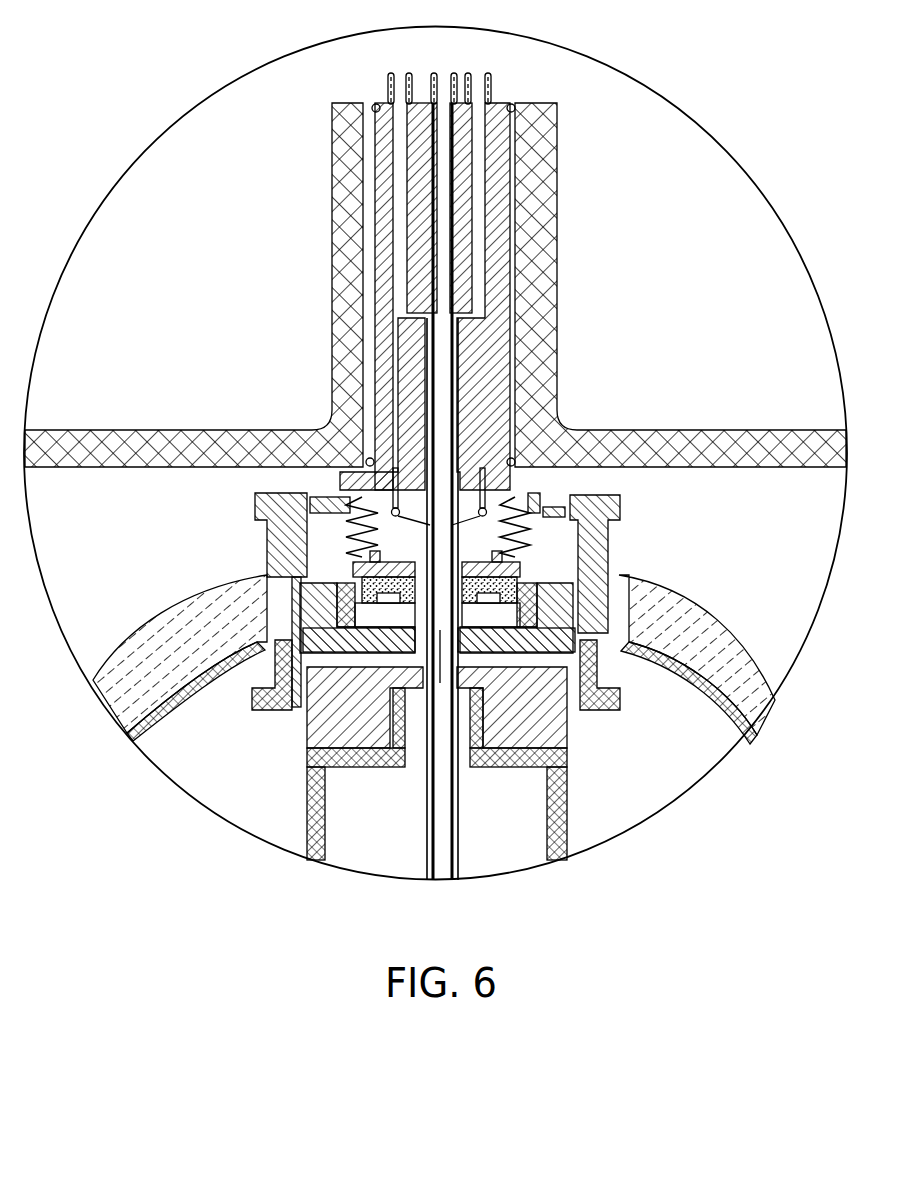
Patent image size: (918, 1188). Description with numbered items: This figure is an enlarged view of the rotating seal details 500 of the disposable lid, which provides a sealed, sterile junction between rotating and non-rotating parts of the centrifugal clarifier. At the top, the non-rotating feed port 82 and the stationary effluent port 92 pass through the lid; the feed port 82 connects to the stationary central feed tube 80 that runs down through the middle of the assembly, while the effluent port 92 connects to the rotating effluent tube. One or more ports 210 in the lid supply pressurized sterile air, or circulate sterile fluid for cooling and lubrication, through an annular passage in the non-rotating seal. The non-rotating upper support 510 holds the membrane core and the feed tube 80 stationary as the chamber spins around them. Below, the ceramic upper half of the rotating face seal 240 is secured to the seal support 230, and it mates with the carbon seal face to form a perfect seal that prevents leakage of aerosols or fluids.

The rotating seal details 500 is at (250, 66).
The port 210 is at (390, 72).
The feed port 82 is at (447, 72).
The effluent port 92 is at (482, 72).
The non-rotating upper support 510 is at (477, 377).
The seal support 230 is at (517, 583).
The rotating face seal upper half 240 is at (520, 613).
The feed tube 80 is at (452, 843).